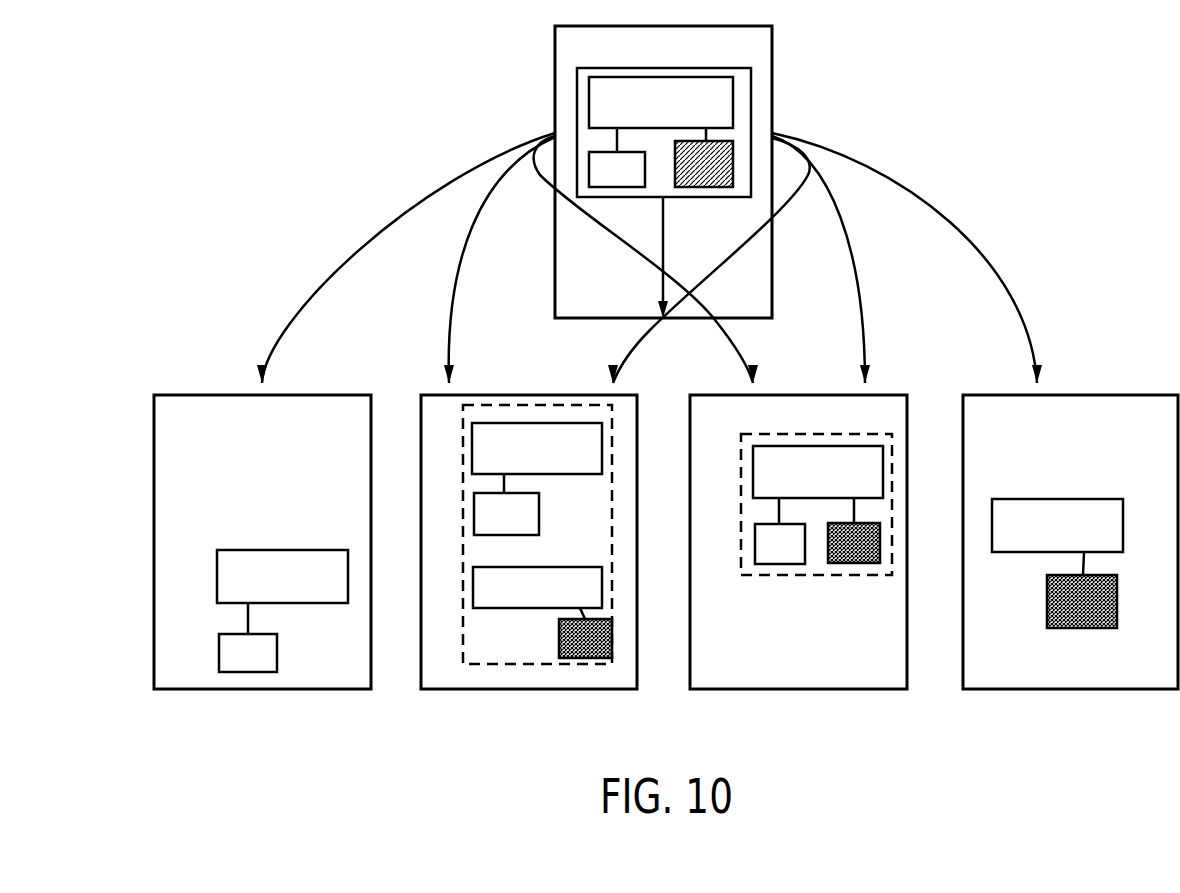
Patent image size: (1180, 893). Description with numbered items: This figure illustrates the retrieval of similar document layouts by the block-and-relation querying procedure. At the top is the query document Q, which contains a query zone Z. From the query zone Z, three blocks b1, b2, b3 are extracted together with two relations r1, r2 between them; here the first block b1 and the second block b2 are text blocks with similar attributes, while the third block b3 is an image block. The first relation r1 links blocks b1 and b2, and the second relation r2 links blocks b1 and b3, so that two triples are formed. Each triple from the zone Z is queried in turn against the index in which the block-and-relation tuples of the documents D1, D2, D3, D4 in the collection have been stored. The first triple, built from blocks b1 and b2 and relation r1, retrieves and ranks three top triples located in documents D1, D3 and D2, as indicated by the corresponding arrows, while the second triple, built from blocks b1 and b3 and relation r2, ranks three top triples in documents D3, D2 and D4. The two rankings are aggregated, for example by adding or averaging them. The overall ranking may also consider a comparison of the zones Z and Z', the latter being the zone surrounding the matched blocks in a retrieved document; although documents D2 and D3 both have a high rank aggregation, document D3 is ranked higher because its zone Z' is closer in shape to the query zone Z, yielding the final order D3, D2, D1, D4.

The query document Q is at (663, 172).
The query zone Z is at (667, 132).
The first block b1 is at (661, 102).
The second block b2 is at (617, 169).
The third block b3 is at (704, 186).
The first relation r1 is at (605, 138).
The second relation r2 is at (731, 133).
The first document D1 is at (262, 542).
The second document D2 is at (529, 542).
The third document D3 is at (798, 542).
The fourth document D4 is at (1070, 542).
The matched zone Z' is at (677, 584).